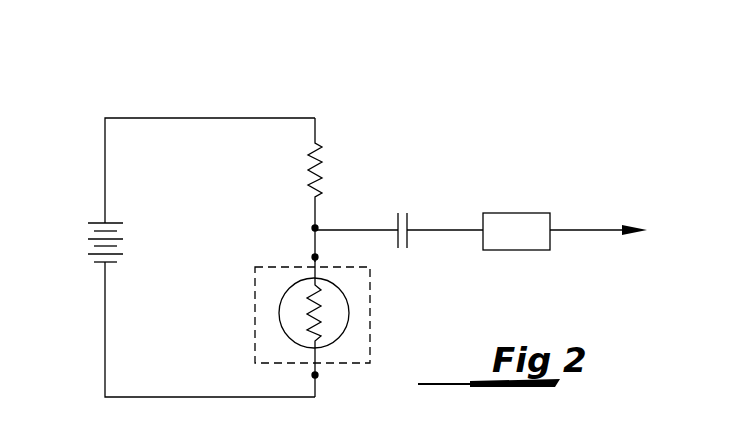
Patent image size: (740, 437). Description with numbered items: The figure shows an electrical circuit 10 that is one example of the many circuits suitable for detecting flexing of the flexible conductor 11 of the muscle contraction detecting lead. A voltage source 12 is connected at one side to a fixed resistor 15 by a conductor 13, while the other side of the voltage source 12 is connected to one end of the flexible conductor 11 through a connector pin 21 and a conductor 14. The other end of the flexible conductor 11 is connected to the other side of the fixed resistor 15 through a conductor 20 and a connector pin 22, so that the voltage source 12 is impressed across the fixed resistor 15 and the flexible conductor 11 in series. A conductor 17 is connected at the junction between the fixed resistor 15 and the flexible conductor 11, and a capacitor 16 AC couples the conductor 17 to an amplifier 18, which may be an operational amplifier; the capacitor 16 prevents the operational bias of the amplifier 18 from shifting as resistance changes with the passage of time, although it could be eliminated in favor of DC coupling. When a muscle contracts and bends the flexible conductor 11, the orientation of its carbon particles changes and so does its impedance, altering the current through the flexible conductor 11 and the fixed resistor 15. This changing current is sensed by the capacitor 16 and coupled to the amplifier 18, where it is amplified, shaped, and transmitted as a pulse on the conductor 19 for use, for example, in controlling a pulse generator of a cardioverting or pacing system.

The circuit 10 is at (226, 96).
The flexible conductor 11 is at (349, 311).
The voltage source 12 is at (100, 222).
The conductor 13 is at (130, 118).
The conductor 14 is at (313, 351).
The fixed resistor 15 is at (311, 157).
The capacitor 16 is at (408, 225).
The conductor 17 is at (352, 230).
The amplifier 18 is at (523, 213).
The conductor 19 is at (600, 230).
The conductor 20 is at (316, 268).
The connector pin 21 is at (318, 378).
The connector pin 22 is at (312, 254).